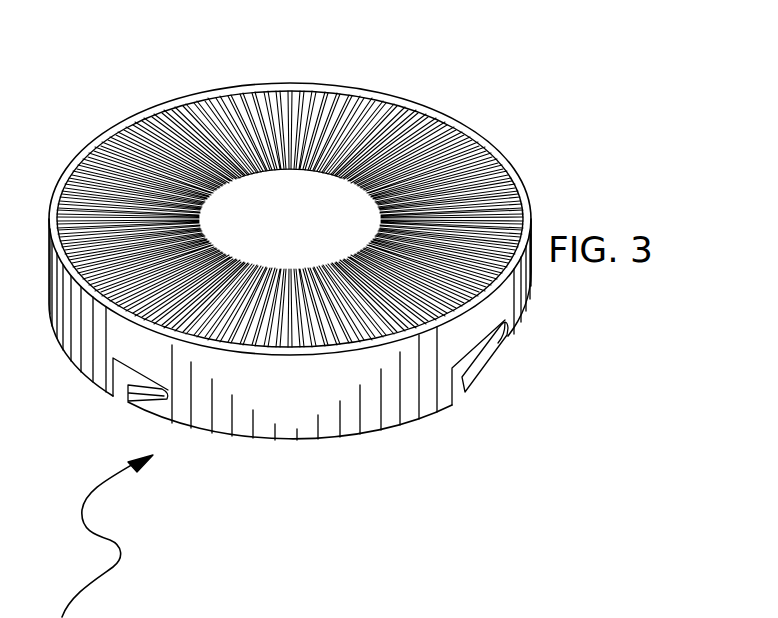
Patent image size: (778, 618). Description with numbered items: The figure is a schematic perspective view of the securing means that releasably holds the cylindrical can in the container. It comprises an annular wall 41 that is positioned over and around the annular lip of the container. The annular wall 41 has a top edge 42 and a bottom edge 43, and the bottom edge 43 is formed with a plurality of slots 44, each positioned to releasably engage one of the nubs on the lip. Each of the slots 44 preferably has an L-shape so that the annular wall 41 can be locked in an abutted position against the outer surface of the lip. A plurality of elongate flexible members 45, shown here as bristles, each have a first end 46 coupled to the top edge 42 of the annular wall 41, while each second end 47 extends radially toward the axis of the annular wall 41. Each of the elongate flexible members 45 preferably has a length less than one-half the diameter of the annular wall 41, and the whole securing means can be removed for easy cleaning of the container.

The annular wall 41 is at (413, 388).
The top edge 42 is at (508, 160).
The bottom edge 43 is at (505, 363).
The slots 44 is at (455, 383).
The elongate flexible members 45 is at (307, 185).
The first end 46 is at (315, 96).
The second end 47 is at (303, 173).